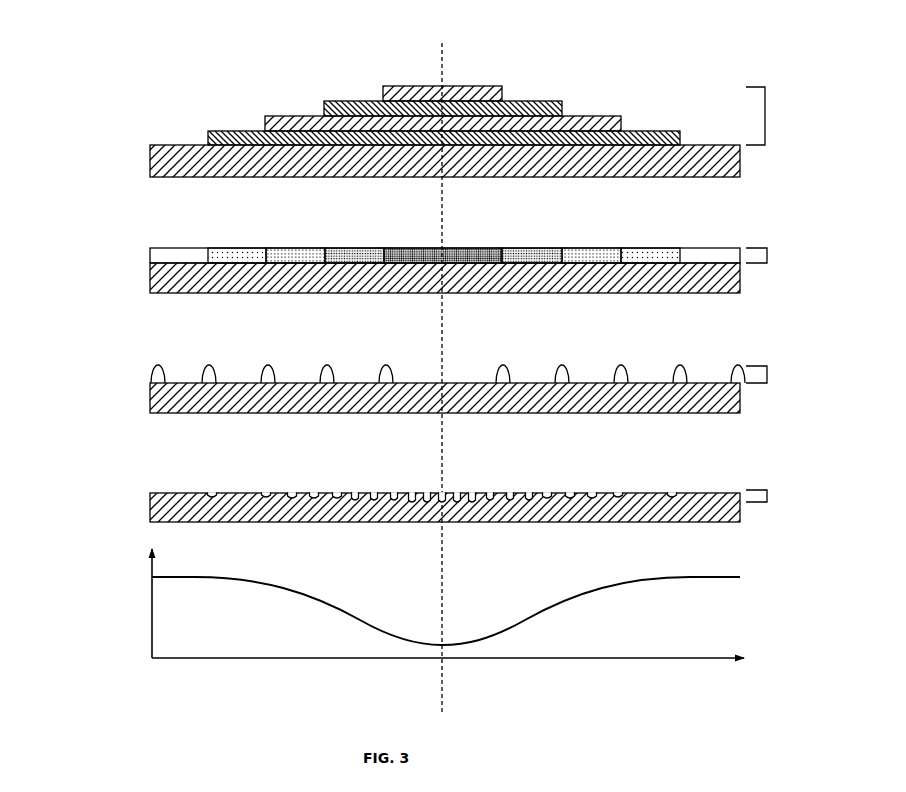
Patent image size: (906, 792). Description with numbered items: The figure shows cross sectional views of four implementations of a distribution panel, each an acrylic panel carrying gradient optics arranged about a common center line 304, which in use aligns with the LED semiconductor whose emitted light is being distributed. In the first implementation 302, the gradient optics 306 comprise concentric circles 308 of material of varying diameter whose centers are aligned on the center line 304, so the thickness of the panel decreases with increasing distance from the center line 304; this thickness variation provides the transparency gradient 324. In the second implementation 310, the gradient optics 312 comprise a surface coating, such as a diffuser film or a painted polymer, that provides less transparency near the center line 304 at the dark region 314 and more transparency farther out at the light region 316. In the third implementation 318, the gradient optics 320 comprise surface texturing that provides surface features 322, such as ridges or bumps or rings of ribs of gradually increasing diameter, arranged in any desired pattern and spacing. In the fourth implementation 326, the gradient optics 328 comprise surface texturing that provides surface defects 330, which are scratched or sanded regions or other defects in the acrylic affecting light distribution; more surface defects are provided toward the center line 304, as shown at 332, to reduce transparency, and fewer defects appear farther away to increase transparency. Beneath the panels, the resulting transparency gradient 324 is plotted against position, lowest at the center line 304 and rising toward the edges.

The first implementation 302 is at (423, 113).
The center line 304 is at (440, 57).
The gradient optics 306 is at (759, 87).
The concentric circles 308 is at (397, 92).
The second implementation 310 is at (423, 256).
The gradient optics 312 is at (760, 248).
The dark region 314 is at (408, 253).
The light region 316 is at (186, 253).
The third implementation 318 is at (423, 371).
The gradient optics 320 is at (760, 366).
The surface features 322 is at (385, 368).
The transparency gradient 324 is at (293, 597).
The fourth implementation 326 is at (423, 483).
The gradient optics 328 is at (760, 490).
The surface defects 330 is at (262, 487).
The more surface defects toward the center line 332 is at (413, 480).